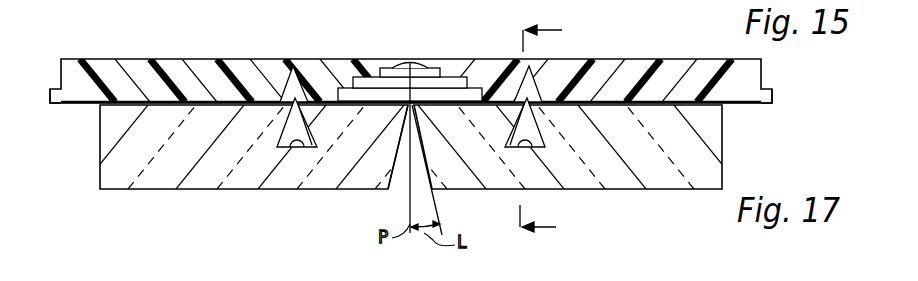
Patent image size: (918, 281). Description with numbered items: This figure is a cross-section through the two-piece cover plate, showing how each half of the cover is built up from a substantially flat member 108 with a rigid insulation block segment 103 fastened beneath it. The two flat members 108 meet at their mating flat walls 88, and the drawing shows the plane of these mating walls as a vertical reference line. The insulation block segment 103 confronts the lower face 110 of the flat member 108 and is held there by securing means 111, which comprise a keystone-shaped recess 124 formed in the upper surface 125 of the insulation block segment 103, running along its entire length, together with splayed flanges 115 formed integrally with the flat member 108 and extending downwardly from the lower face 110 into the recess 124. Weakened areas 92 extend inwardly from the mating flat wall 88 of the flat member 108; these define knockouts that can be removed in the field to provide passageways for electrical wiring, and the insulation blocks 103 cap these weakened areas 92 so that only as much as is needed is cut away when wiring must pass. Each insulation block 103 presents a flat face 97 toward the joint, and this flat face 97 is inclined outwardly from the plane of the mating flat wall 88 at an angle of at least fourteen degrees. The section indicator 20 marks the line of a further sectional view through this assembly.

The flat member 108 is at (97, 64).
The upper surface 125 is at (157, 100).
The lower face 110 is at (91, 103).
The securing means 111 is at (289, 84).
The weakened areas 92 is at (373, 84).
The mating flat wall 88 is at (434, 68).
The rigid insulation block segment 103 is at (116, 167).
The flat face 97 is at (429, 188).
The splayed flanges 115 is at (282, 122).
The keystone-shaped recess 124 is at (277, 143).
The section line 20 is at (556, 132).